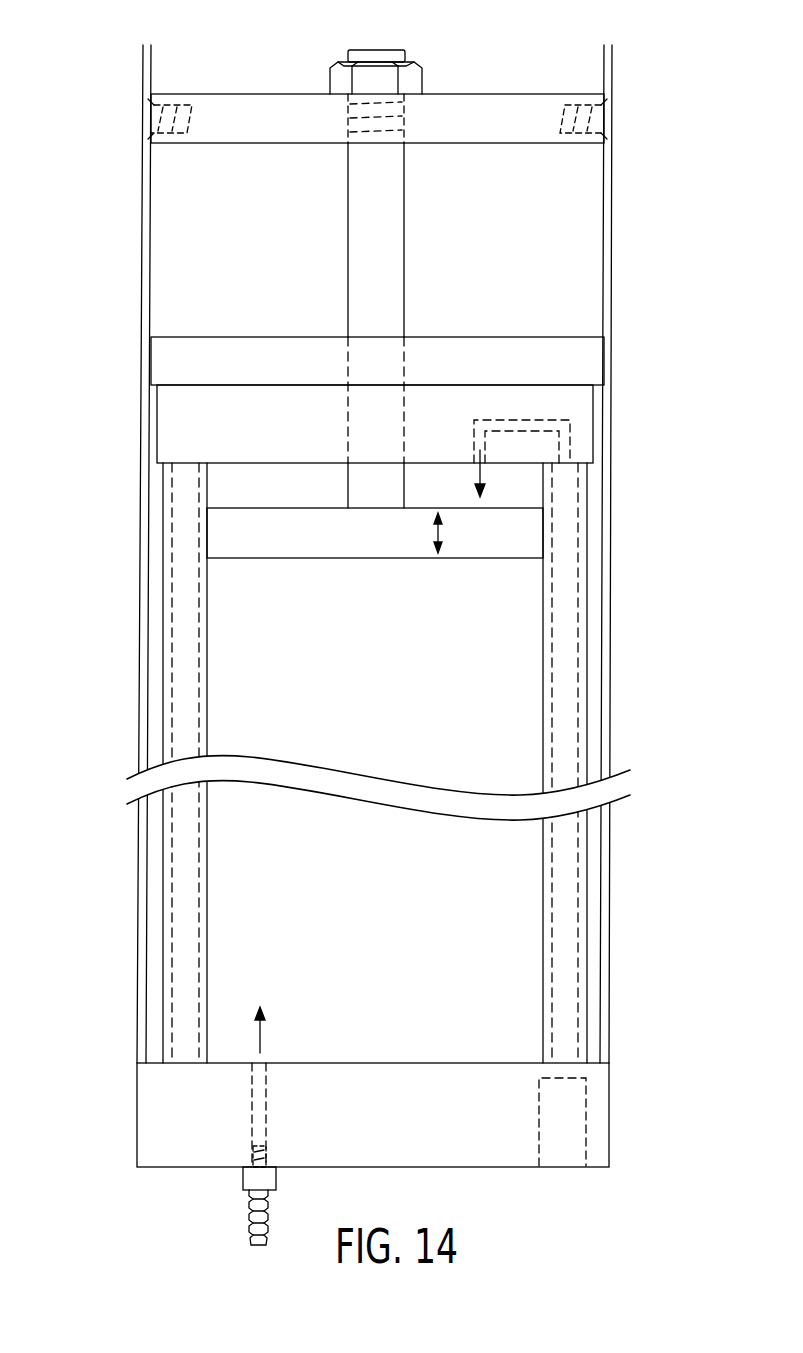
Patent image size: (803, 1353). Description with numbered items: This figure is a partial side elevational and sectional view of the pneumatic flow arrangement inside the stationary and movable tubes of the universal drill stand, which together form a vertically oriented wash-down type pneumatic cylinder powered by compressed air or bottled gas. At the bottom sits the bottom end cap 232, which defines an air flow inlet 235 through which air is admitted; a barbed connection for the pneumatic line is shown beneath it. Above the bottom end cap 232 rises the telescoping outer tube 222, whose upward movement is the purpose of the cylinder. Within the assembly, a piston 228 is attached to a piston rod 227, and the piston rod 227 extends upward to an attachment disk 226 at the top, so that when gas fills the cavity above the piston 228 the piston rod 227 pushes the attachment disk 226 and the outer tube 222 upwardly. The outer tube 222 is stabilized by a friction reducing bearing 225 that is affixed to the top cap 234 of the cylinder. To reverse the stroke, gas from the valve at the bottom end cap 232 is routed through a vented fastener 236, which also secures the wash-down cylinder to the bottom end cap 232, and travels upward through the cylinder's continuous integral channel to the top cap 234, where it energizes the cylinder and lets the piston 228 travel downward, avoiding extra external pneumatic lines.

The outer tube 222 is at (612, 567).
The friction reducing bearing 225 is at (583, 362).
The attachment disk 226 is at (533, 100).
The piston rod 227 is at (368, 207).
The piston 228 is at (240, 538).
The bottom end cap 232 is at (153, 1125).
The top cap 234 is at (178, 430).
The air flow inlet 235 is at (265, 1150).
The vented fastener 236 is at (587, 1118).